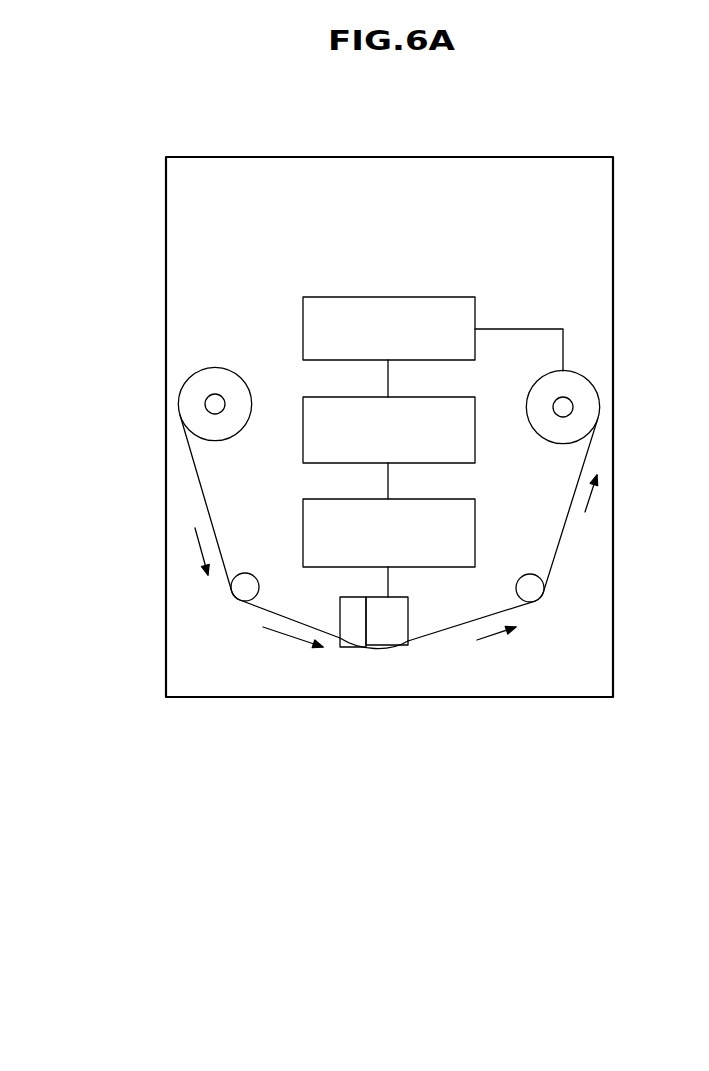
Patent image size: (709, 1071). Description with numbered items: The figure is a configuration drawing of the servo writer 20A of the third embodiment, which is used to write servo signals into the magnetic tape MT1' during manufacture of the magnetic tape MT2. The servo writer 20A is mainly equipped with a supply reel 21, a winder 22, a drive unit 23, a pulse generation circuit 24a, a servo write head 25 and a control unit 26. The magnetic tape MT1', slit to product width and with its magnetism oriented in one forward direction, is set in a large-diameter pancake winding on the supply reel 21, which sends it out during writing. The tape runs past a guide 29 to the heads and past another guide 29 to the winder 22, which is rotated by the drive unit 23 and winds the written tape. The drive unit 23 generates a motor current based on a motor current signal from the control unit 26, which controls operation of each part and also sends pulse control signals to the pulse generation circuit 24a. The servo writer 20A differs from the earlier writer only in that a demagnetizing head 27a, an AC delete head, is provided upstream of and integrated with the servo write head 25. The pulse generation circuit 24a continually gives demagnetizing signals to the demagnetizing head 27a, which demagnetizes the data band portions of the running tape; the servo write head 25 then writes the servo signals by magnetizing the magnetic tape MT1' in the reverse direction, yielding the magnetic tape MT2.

The servo writer 20A is at (457, 157).
The supply reel 21 is at (217, 367).
The winder 22 is at (590, 374).
The drive unit 23 is at (450, 297).
The pulse generation circuit 24a is at (455, 568).
The servo write head 25 is at (408, 622).
The control unit 26 is at (476, 440).
The demagnetizing head 27a is at (352, 627).
The guide 29 is at (240, 605).
The magnetic tape MT1' is at (235, 532).
The magnetic tape MT2 is at (557, 557).